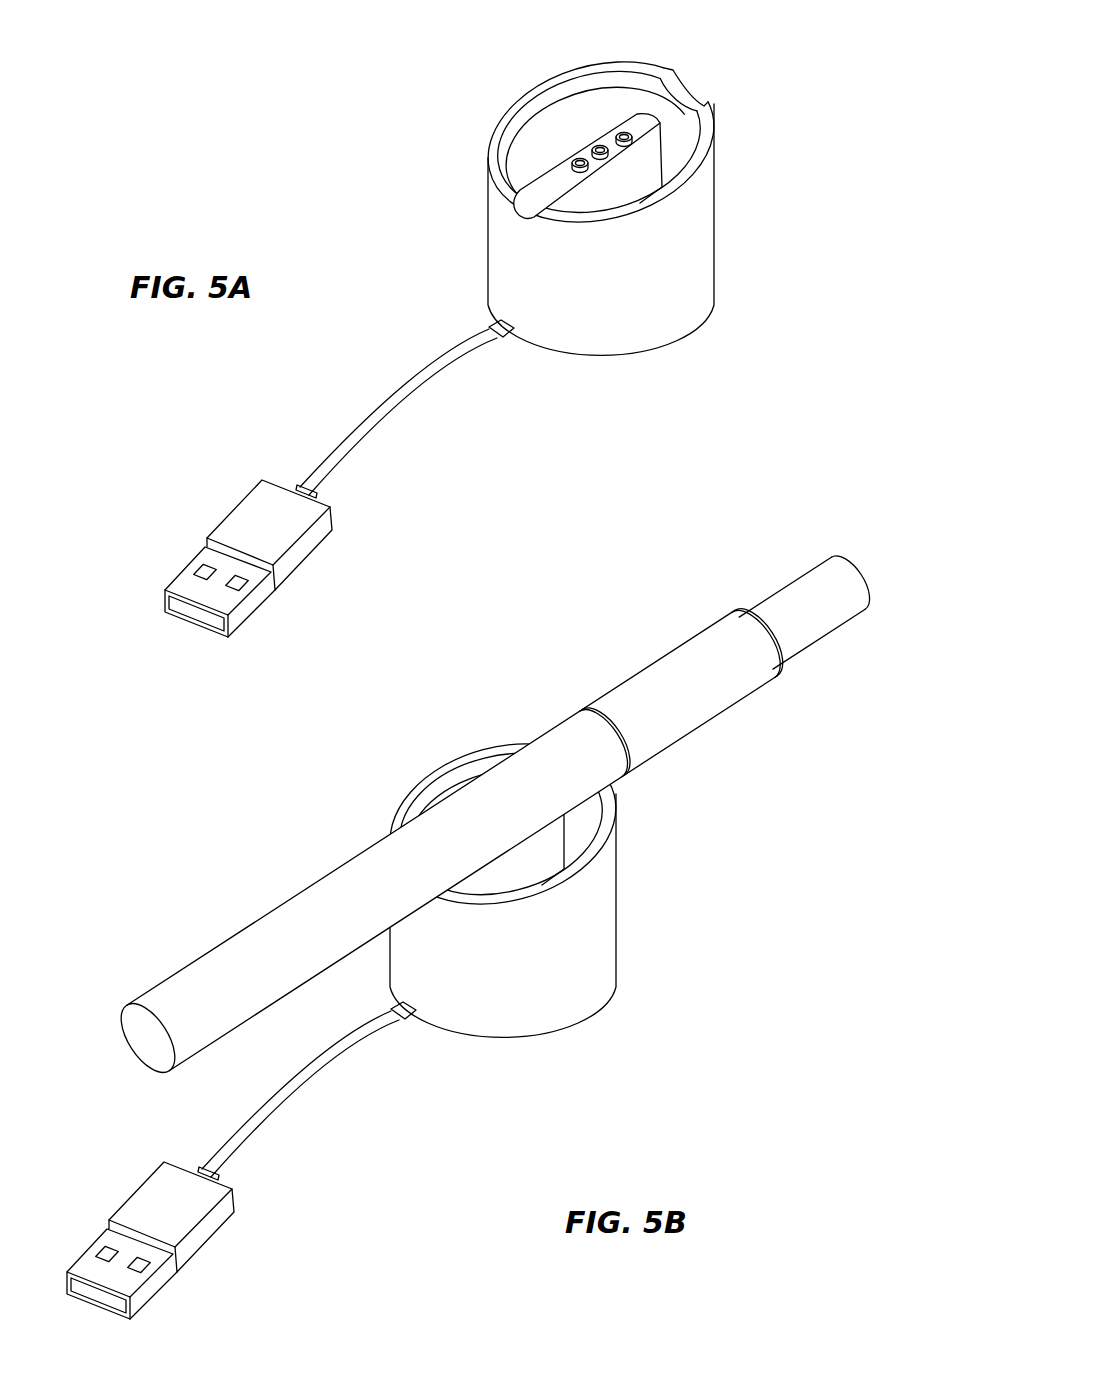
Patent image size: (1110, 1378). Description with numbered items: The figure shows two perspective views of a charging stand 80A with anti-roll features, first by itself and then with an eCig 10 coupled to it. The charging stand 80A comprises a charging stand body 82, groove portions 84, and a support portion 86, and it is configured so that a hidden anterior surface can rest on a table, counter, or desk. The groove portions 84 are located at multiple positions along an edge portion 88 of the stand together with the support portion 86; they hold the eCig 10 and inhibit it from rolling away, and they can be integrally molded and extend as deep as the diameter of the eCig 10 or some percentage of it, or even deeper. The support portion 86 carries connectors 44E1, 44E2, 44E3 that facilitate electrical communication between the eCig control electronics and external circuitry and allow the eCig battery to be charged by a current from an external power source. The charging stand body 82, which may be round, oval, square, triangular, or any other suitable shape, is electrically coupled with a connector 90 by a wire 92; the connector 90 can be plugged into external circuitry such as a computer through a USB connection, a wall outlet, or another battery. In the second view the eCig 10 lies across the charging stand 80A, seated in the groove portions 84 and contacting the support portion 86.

In FIG. 5B, the eCig 10 is at (635, 653).
In FIG. 5A, the charging stand 80A is at (635, 203).
In FIG. 5B, the charging stand 80A is at (557, 900).
In FIG. 5A, the charging stand body 82 is at (653, 320).
In FIG. 5B, the charging stand body 82 is at (556, 1003).
In FIG. 5A, the groove portion 84 is at (683, 92).
In FIG. 5B, the groove portion 84 is at (503, 824).
In FIG. 5A, the support portion 86 is at (635, 162).
In FIG. 5B, the support portion 86 is at (543, 837).
In FIG. 5A, the edge portion 88 is at (495, 142).
In FIG. 5B, the edge portion 88 is at (428, 787).
In FIG. 5A, the connector 90 is at (232, 506).
In FIG. 5B, the connector 90 is at (135, 1190).
In FIG. 5A, the wire 92 is at (382, 406).
In FIG. 5B, the wire 92 is at (298, 1095).
In FIG. 5A, the connector 44E1 is at (575, 158).
In FIG. 5A, the connector 44E2 is at (600, 145).
In FIG. 5A, the connector 44E3 is at (624, 132).